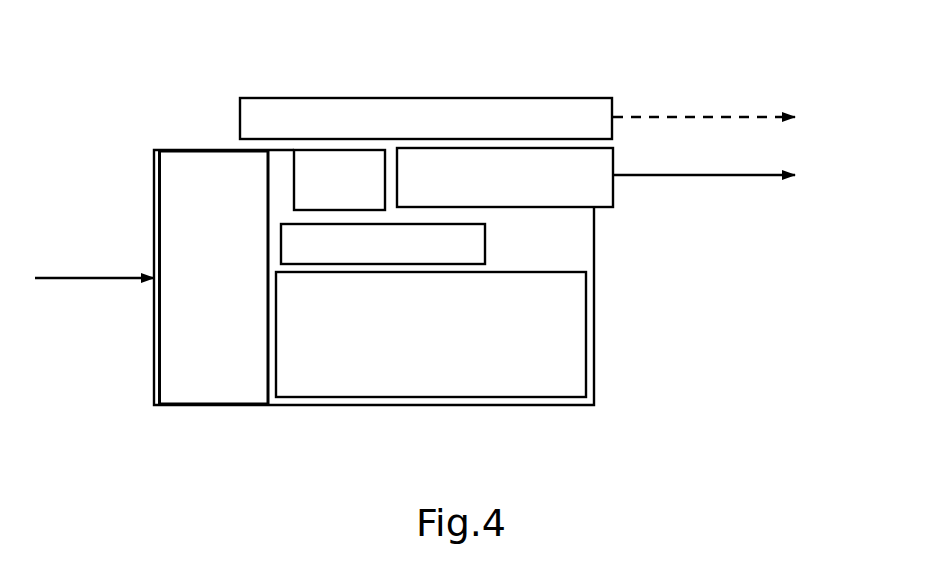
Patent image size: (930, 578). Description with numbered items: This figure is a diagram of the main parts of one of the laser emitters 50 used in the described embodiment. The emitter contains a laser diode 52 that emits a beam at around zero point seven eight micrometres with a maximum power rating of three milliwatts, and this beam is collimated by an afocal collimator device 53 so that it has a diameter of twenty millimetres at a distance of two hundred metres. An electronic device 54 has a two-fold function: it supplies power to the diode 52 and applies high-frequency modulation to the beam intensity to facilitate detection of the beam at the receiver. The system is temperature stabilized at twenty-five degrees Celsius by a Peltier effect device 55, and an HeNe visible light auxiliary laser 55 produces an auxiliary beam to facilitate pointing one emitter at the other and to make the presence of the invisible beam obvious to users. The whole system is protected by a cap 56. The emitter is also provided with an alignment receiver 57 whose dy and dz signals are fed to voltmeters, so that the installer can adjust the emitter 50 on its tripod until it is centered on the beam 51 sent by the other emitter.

The laser emitter 50 is at (435, 52).
The beam 51 is at (80, 279).
The laser diode 52 is at (312, 167).
The afocal collimator device 53 is at (597, 192).
The electronic device 54 is at (535, 378).
The Peltier effect device 55 is at (572, 105).
The cap 56 is at (595, 322).
The alignment receiver 57 is at (203, 378).